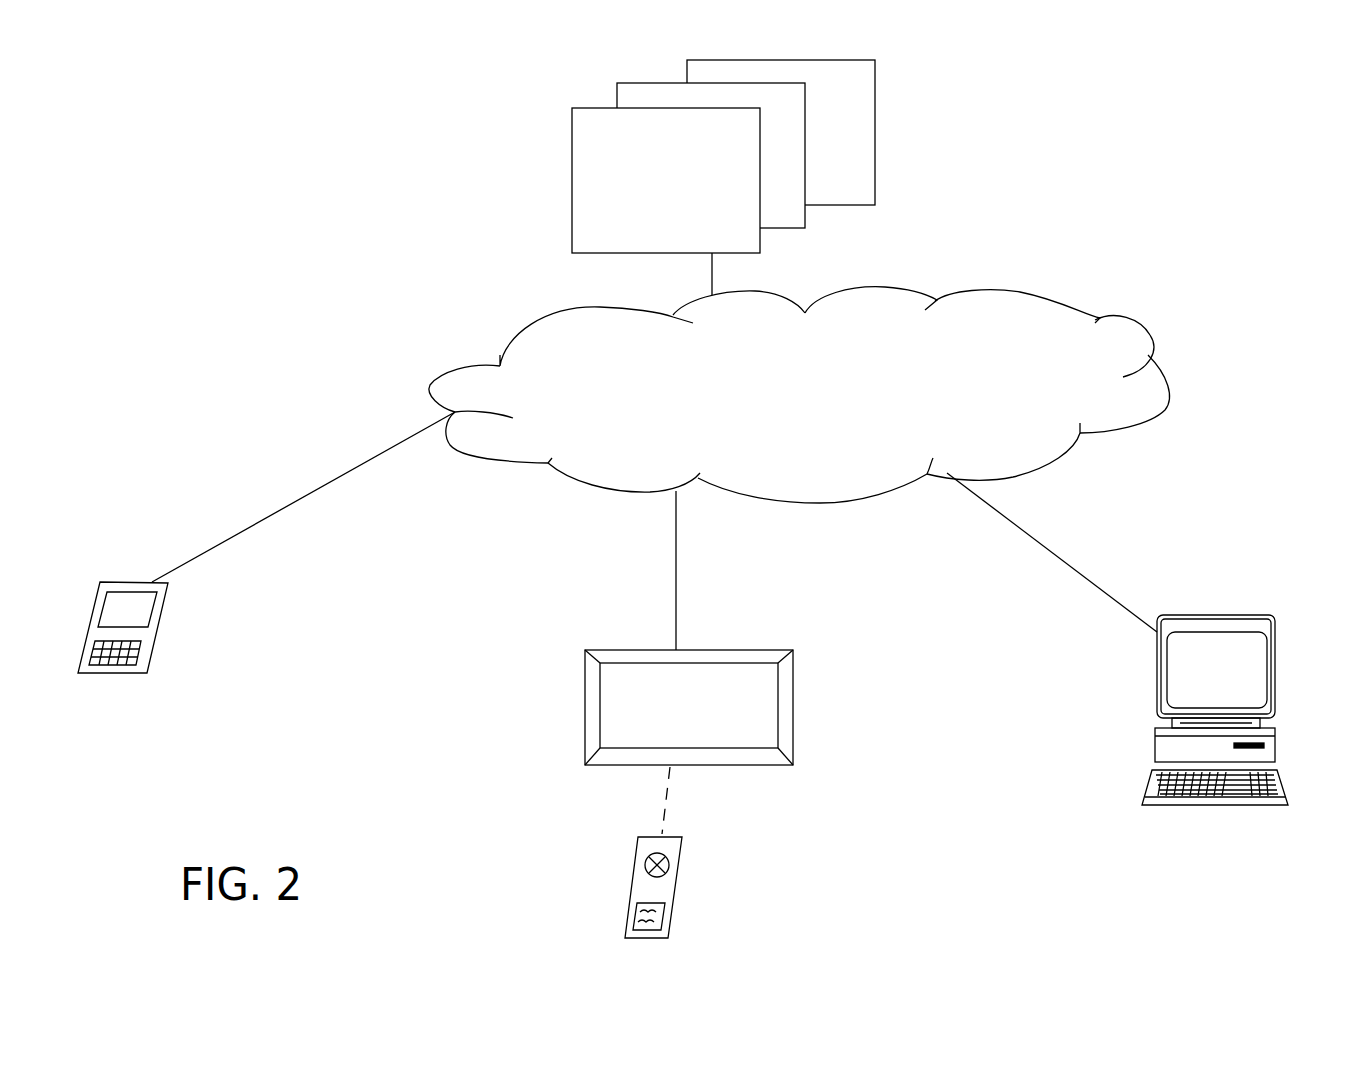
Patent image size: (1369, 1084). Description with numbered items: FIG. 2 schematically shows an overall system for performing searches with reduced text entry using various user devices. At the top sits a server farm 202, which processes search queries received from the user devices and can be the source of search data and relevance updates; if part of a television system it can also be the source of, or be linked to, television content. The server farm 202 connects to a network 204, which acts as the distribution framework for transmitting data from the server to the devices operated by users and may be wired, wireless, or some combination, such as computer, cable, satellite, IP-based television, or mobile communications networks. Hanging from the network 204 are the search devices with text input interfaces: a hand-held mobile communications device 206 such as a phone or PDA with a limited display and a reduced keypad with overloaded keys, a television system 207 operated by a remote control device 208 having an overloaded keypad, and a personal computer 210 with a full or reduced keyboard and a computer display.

The server farm 202 is at (682, 186).
The network 204 is at (822, 432).
The hand-held mobile communications device 206 is at (157, 627).
The television system 207 is at (585, 688).
The remote control device 208 is at (632, 879).
The personal computer 210 is at (1277, 660).